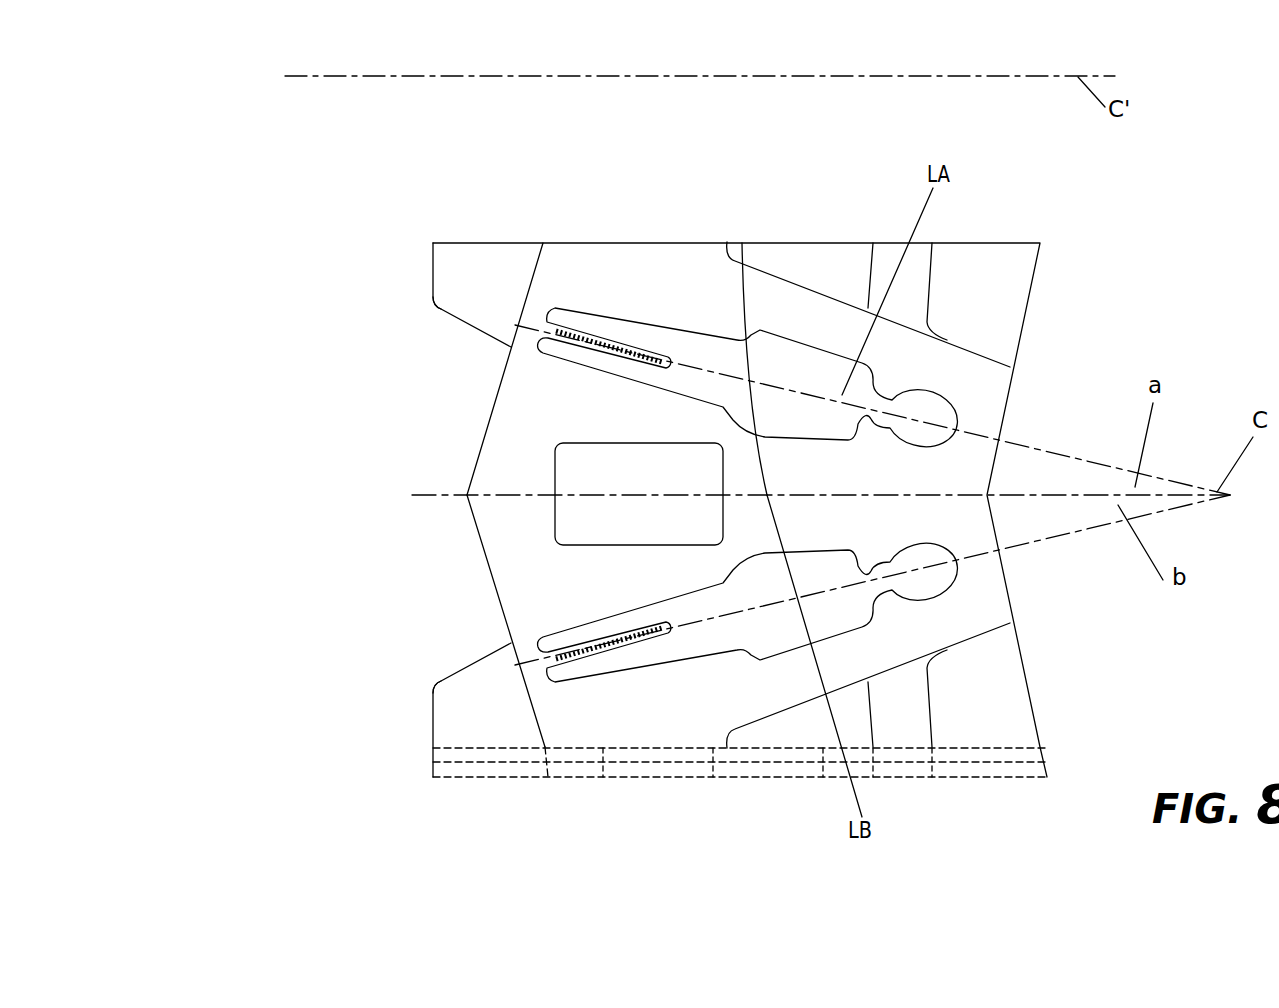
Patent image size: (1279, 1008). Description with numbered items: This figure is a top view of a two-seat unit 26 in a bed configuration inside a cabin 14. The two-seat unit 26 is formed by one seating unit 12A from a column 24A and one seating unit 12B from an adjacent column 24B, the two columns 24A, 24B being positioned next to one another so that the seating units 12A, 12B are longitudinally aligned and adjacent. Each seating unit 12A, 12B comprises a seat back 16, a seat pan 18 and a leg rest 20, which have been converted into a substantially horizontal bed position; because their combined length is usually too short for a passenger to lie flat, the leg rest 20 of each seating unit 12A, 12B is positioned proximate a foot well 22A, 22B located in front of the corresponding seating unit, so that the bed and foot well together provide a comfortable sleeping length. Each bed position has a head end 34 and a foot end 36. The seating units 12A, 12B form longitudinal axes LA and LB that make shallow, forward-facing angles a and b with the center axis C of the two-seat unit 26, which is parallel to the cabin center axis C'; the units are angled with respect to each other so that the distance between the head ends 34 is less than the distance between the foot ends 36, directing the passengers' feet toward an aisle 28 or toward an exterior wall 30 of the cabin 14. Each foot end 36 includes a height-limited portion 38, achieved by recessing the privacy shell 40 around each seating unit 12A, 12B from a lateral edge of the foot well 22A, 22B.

The seating unit 12A is at (477, 302).
The seating unit 12B is at (488, 575).
The cabin 14 is at (995, 778).
The seat back 16 is at (950, 547).
The seat pan 18 is at (725, 327).
The leg rest 20 is at (588, 280).
The foot well 22A is at (480, 273).
The foot well 22B is at (463, 705).
The column 24A is at (240, 423).
The column 24B is at (255, 545).
The two-seat unit 26 is at (1010, 622).
The aisle 28 is at (1118, 180).
The exterior wall 30 is at (747, 778).
The head end 34 is at (960, 373).
The foot end 36 is at (508, 265).
The height-limited portion 38 is at (448, 262).
The privacy shell 40 is at (573, 490).